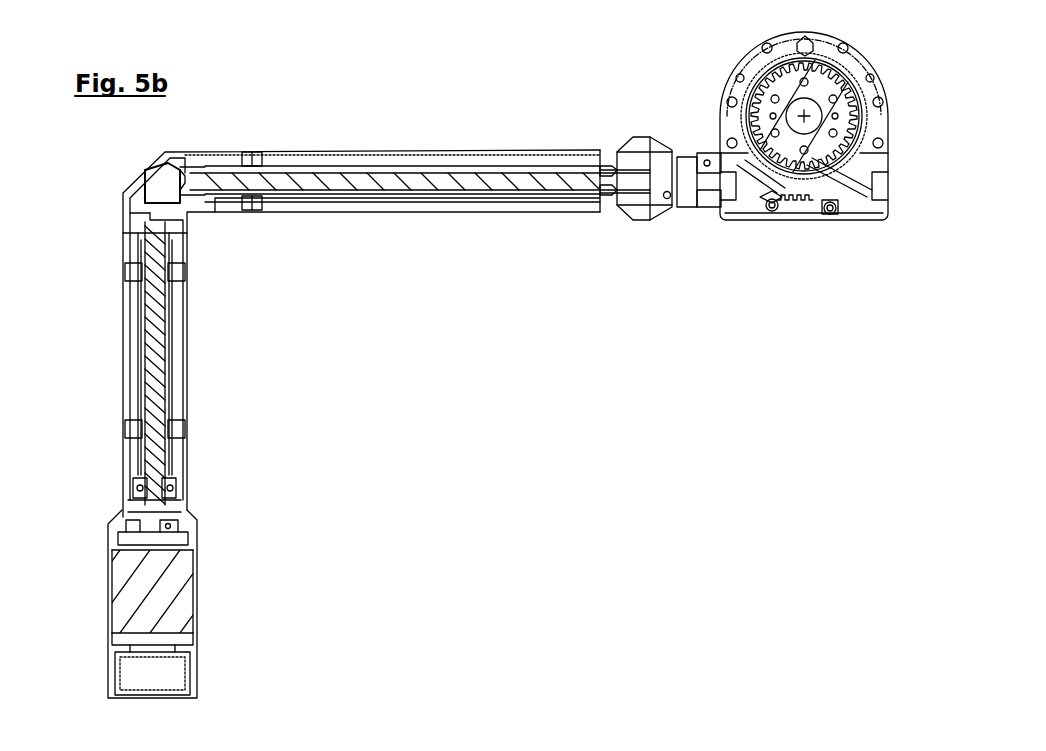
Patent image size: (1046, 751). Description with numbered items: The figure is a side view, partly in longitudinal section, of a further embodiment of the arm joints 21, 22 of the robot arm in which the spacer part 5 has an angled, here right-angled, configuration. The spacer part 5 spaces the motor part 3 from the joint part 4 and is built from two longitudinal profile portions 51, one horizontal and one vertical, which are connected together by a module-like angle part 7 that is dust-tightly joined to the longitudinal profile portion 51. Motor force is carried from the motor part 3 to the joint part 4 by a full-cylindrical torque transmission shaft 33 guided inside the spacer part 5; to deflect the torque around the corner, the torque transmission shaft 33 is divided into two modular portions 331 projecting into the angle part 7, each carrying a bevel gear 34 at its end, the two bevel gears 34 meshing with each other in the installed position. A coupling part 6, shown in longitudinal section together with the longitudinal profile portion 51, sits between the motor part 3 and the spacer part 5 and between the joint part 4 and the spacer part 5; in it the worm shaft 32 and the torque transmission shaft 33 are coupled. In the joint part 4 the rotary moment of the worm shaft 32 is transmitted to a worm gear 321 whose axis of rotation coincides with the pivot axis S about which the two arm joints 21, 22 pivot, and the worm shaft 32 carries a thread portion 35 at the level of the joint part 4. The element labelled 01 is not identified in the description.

The motor part 3 is at (196, 614).
The base mounting element 01 is at (158, 538).
The coupling part 6 is at (694, 216).
The angle part 7 is at (124, 198).
The bevel gear 34 is at (145, 170).
The arm joint 21 is at (392, 122).
The arm joint 22 is at (392, 122).
The spacer part 5 is at (298, 132).
The longitudinal profile portion 51 is at (440, 212).
The torque transmission shaft 33 is at (520, 191).
The portion 331 is at (366, 186).
The joint part 4 is at (790, 221).
The worm gear 321 is at (858, 95).
The pivot axis S is at (800, 114).
The worm shaft 32 is at (775, 199).
The thread portion 35 is at (831, 215).